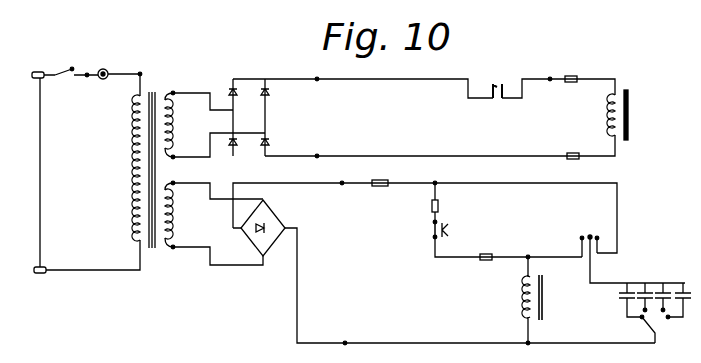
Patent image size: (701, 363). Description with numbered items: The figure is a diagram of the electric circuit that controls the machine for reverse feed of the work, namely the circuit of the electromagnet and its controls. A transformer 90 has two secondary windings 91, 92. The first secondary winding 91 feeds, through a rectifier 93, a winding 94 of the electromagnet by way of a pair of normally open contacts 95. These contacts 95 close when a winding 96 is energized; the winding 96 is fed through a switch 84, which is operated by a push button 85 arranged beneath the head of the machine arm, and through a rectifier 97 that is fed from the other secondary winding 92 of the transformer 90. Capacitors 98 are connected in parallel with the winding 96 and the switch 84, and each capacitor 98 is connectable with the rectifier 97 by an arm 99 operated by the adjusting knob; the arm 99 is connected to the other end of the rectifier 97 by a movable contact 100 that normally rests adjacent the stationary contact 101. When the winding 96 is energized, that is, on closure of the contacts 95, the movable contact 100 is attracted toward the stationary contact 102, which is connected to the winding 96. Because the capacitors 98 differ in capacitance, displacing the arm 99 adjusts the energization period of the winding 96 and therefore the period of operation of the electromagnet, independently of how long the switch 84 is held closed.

The switch 84 is at (426, 234).
The push button 85 is at (456, 228).
The transformer 90 is at (127, 170).
The secondary winding 91 is at (173, 122).
The secondary winding 92 is at (178, 218).
The rectifier 93 is at (249, 117).
The winding of the electromagnet 94 is at (605, 115).
The normally open contacts 95 is at (496, 72).
The winding 96 is at (518, 300).
The rectifier 97 is at (276, 226).
The capacitors 98 is at (655, 287).
The arm 99 is at (643, 330).
The movable contact 100 is at (580, 243).
The stationary contact 101 is at (600, 244).
The stationary contact 102 is at (582, 235).